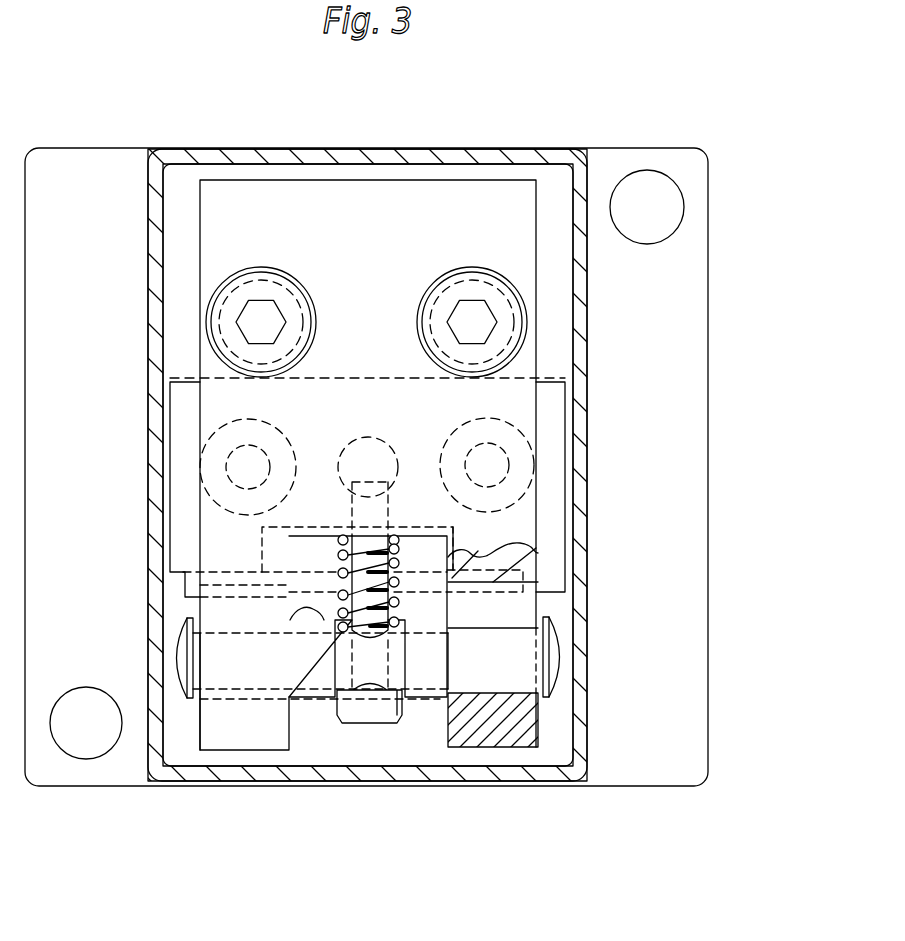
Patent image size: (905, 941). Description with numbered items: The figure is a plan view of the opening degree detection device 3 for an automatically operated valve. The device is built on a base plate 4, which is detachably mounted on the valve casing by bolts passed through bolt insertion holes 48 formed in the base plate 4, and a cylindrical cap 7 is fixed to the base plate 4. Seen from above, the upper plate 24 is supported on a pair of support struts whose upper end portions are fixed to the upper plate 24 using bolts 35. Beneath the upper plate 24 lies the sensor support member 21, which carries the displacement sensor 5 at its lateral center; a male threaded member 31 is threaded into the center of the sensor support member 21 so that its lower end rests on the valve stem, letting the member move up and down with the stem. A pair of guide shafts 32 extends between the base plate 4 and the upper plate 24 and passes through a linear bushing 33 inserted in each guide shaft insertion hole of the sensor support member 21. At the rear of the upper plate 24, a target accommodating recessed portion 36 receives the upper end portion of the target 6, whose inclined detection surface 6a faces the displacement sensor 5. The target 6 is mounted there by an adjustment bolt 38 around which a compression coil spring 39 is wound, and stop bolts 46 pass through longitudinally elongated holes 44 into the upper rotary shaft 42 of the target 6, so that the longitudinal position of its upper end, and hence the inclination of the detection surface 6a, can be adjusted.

The opening degree detection device 3 is at (398, 467).
The base plate 4 is at (712, 462).
The displacement sensor 5 is at (430, 585).
The target 6 is at (320, 728).
The detection surface 6a is at (292, 640).
The cylindrical cap 7 is at (456, 157).
The sensor support member 21 is at (548, 497).
The upper plate 24 is at (340, 205).
The male threaded member 31 is at (368, 443).
The guide shafts 32 is at (238, 470).
The linear bushing 33 is at (222, 415).
The bolts 35 is at (510, 322).
The target accommodating recessed portion 36 is at (447, 610).
The adjustment bolt 38 is at (372, 706).
The compression coil spring 39 is at (338, 552).
The upper rotary shaft 42 is at (397, 675).
The longitudinally elongated holes 44 is at (232, 692).
The stop bolts 46 is at (182, 682).
The bolt insertion holes 48 is at (645, 193).